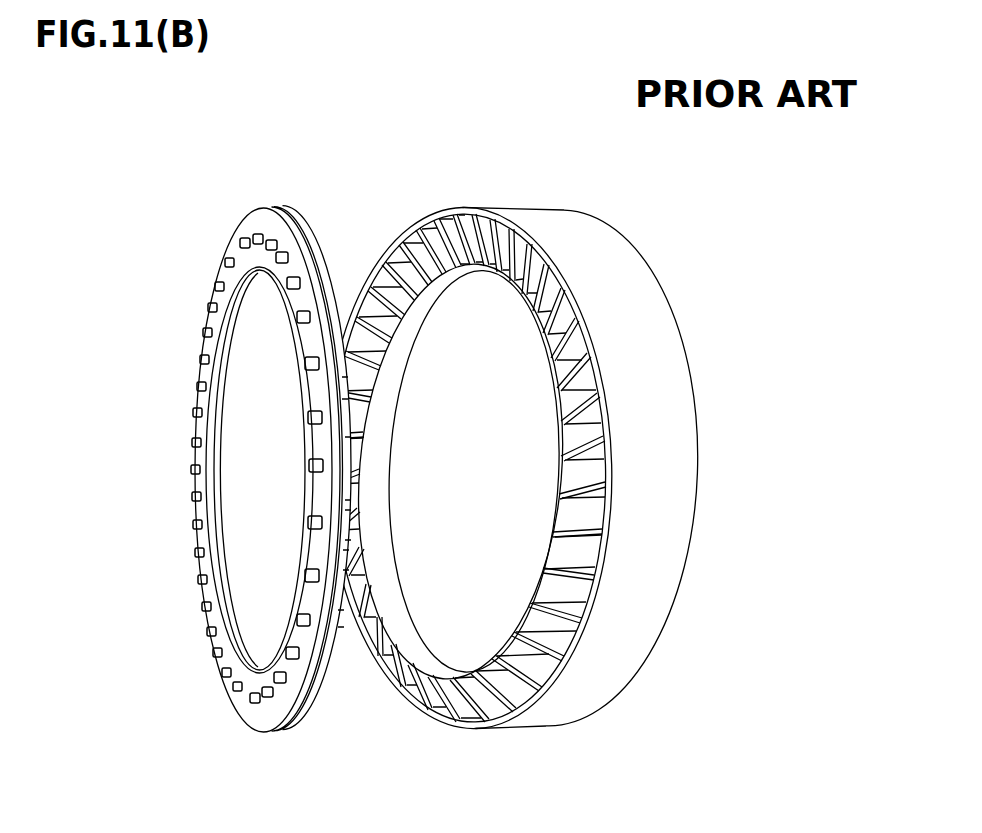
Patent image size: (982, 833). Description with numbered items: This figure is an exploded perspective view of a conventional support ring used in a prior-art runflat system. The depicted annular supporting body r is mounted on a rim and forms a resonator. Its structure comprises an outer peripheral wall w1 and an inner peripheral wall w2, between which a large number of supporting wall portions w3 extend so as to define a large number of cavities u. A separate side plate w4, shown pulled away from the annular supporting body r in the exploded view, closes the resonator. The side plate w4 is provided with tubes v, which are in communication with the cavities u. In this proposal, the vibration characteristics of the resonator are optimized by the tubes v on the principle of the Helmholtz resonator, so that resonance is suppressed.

The annular supporting body r is at (657, 250).
The cavities u is at (583, 425).
The tubes v is at (207, 310).
The outer peripheral wall w1 is at (538, 222).
The inner peripheral wall w2 is at (388, 380).
The supporting wall portions w3 is at (425, 237).
The side plate w4 is at (260, 222).